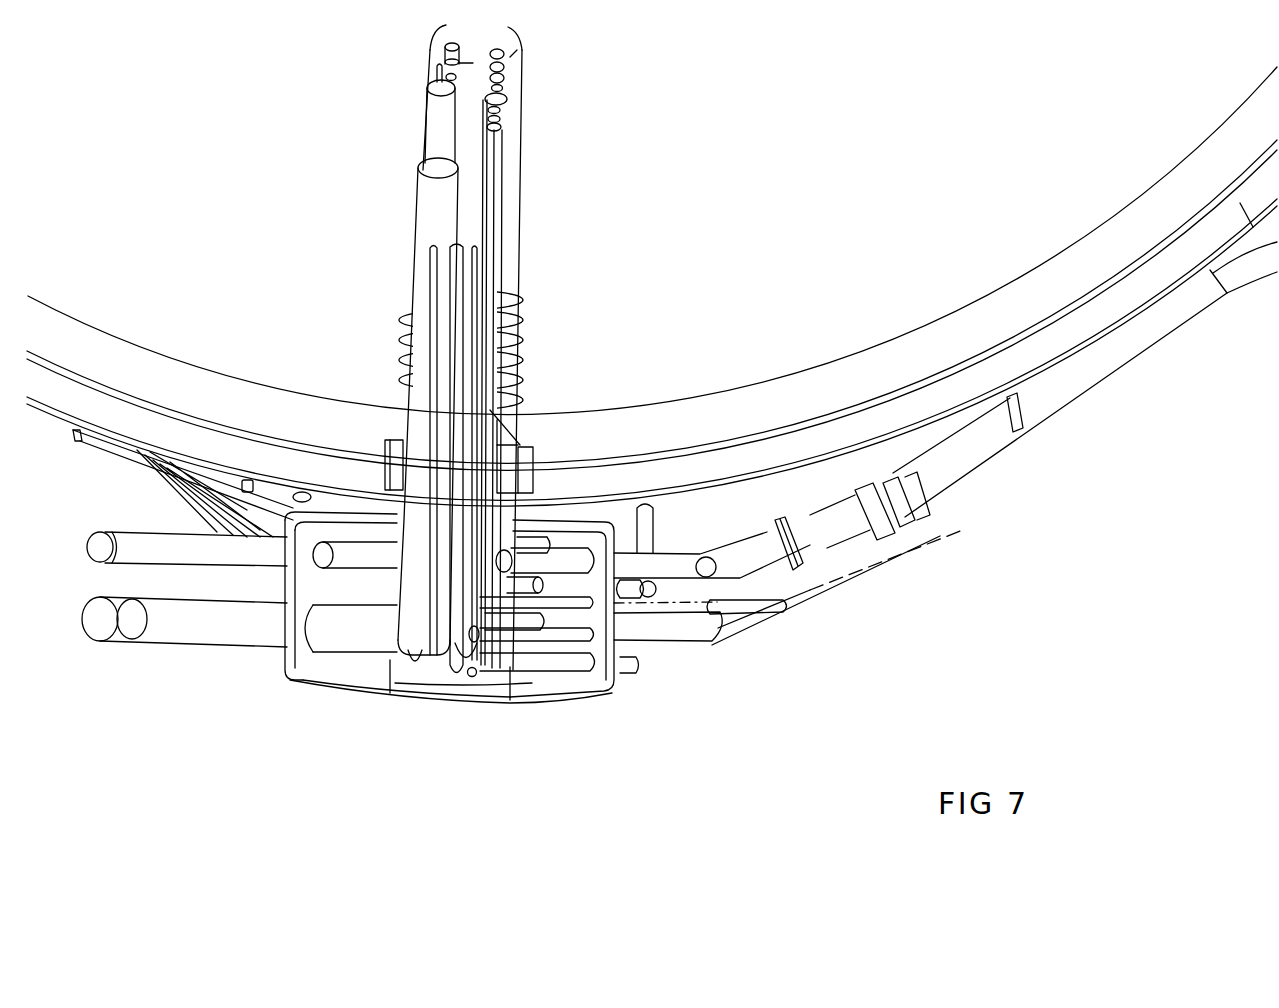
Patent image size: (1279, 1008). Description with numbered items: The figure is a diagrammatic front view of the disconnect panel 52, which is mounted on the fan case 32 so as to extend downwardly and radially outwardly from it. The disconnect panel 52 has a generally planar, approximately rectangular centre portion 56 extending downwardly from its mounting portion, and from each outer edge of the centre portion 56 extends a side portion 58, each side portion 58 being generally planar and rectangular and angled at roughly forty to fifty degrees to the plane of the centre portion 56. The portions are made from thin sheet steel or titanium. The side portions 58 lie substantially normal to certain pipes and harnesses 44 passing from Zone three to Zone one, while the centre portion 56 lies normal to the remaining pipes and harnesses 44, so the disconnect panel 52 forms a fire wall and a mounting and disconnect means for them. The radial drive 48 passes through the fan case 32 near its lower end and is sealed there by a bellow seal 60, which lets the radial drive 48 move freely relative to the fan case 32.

The fan case 32 is at (821, 393).
The pipes and harnesses 44 is at (558, 553).
The radial drive 48 is at (512, 180).
The disconnect panel 52 is at (480, 700).
The centre portion 56 is at (420, 680).
The side portion 58 is at (268, 735).
The bellow seal 60 is at (523, 340).